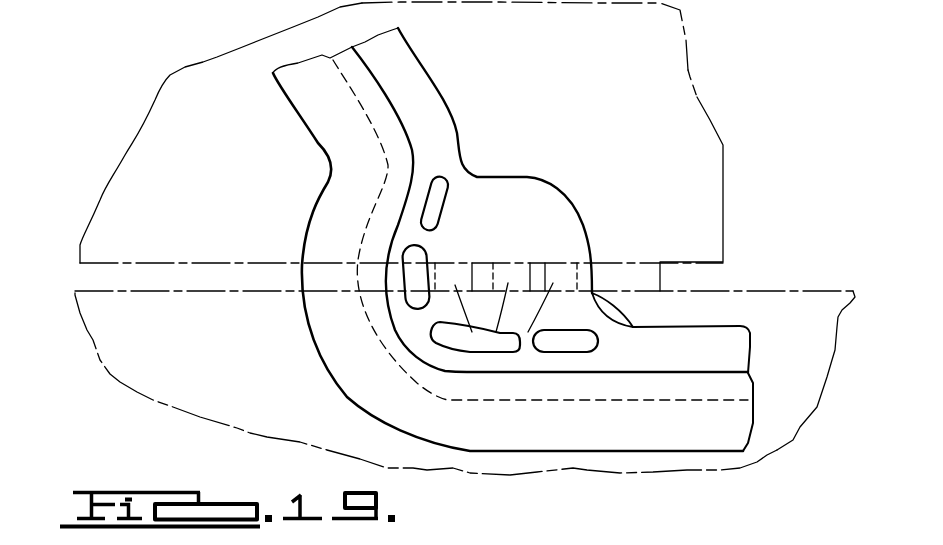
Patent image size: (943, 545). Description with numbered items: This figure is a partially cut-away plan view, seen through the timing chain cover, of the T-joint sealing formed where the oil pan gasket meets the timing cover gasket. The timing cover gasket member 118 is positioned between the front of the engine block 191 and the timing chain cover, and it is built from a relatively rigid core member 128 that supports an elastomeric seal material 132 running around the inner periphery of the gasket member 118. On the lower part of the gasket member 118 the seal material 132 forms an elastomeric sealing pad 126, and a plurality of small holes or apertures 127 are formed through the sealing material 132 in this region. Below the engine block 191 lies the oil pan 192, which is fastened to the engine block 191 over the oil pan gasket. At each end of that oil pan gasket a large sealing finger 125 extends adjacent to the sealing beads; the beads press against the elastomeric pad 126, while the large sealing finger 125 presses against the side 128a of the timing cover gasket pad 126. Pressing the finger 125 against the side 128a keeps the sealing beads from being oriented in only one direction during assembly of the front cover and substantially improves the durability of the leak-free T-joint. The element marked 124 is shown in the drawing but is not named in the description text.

The gasket member 118 is at (268, 93).
The segmented retaining strip 124 is at (523, 340).
The sealing finger 125 is at (620, 265).
The sealing pad 126 is at (492, 200).
The apertures 127 is at (428, 208).
The core member 128 is at (319, 107).
The side of the timing cover gasket pad 128a is at (630, 322).
The elastomeric seal material 132 is at (412, 83).
The engine block 191 is at (690, 68).
The oil pan 192 is at (787, 285).